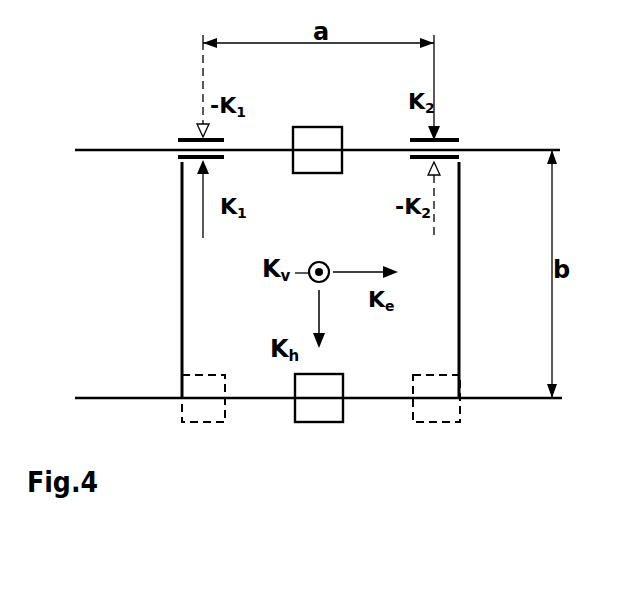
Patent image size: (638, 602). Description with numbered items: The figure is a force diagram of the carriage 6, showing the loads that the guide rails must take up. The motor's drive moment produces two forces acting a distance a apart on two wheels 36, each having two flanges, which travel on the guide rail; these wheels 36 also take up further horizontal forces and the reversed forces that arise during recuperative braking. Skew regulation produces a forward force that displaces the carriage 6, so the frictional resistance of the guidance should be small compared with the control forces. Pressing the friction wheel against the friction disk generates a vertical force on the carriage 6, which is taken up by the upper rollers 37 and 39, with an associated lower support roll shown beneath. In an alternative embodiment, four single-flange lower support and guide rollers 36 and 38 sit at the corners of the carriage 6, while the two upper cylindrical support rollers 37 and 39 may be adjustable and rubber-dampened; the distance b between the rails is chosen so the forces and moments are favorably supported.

The carriage 6 is at (212, 300).
The wheels 36 is at (185, 147).
The upper support roller 37 is at (322, 408).
The lower support and guide rollers 38 is at (208, 408).
The upper support roller 39 is at (318, 143).